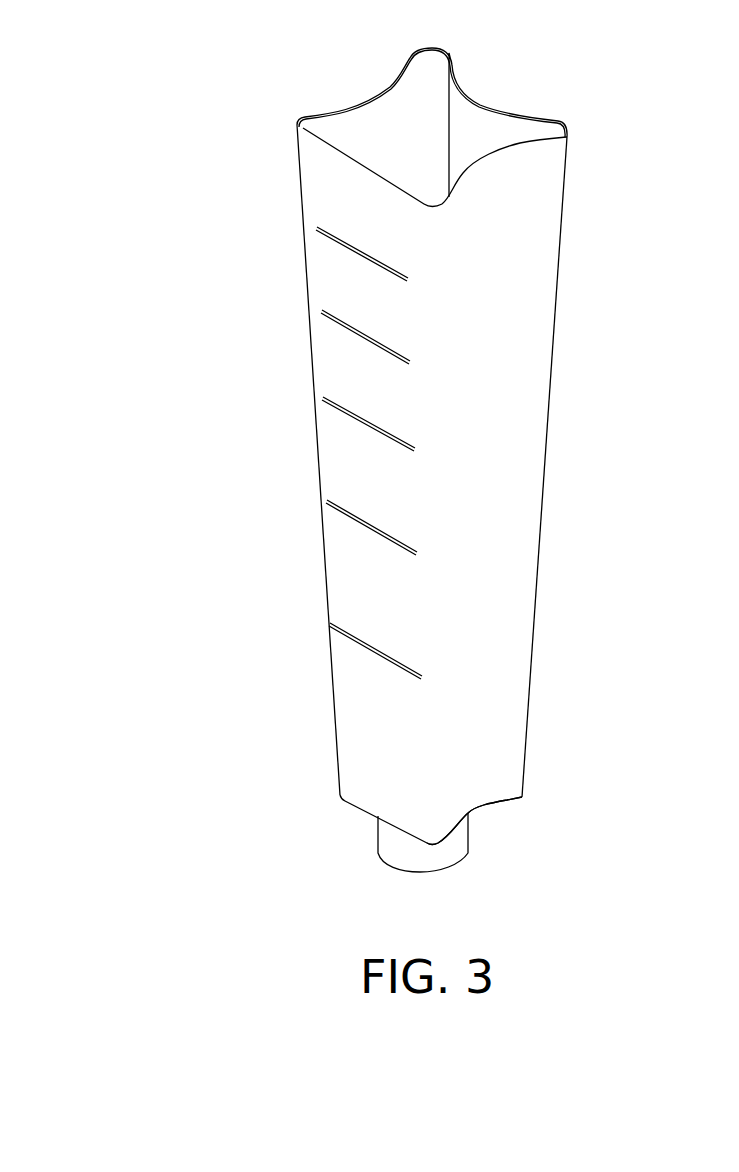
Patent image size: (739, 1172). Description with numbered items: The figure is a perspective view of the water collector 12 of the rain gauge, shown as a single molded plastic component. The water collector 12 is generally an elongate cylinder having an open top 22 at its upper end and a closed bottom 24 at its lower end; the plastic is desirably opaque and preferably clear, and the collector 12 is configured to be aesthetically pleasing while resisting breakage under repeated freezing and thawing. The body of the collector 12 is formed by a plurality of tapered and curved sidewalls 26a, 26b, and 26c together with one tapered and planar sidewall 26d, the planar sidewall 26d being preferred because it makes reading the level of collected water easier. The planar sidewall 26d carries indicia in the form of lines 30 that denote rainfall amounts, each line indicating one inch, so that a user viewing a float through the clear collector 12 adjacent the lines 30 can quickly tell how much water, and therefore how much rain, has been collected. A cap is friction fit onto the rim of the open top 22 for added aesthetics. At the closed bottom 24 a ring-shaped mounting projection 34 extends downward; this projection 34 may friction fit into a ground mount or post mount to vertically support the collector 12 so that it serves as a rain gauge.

The water collector 12 is at (157, 257).
The open top 22 is at (460, 124).
The closed bottom 24 is at (487, 824).
The tapered and curved sidewall 26a is at (352, 108).
The tapered and curved sidewall 26b is at (498, 108).
The tapered and curved sidewall 26c is at (497, 267).
The tapered and planar sidewall 26d is at (322, 180).
The lines 30 is at (330, 623).
The mounting projection 34 is at (382, 857).